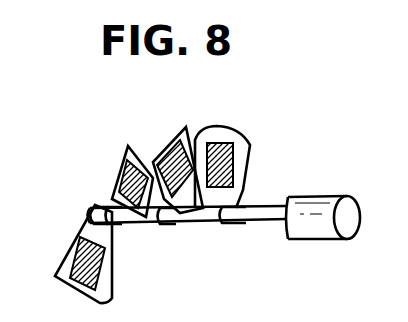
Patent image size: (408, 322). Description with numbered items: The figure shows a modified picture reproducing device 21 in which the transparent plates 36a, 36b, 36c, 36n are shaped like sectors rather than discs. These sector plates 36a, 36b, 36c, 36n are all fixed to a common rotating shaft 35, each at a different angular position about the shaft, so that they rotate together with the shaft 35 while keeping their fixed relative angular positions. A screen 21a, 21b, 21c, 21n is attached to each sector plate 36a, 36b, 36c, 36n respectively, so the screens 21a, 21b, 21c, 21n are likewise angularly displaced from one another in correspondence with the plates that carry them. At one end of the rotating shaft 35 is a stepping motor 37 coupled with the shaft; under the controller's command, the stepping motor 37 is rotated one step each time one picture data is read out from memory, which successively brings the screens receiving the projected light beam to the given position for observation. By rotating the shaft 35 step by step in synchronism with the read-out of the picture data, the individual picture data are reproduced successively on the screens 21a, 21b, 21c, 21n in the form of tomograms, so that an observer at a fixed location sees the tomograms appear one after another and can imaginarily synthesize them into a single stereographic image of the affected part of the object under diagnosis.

The picture reproducing device 21 is at (224, 122).
The screen 21a is at (238, 182).
The screen 21b is at (177, 224).
The screen 21c is at (117, 224).
The screen 21n is at (73, 240).
The rotating shaft 35 is at (250, 221).
The transparent plate 36a is at (249, 146).
The transparent plate 36b is at (168, 134).
The transparent plate 36c is at (125, 148).
The transparent plate 36n is at (105, 285).
The stepping motor 37 is at (324, 203).